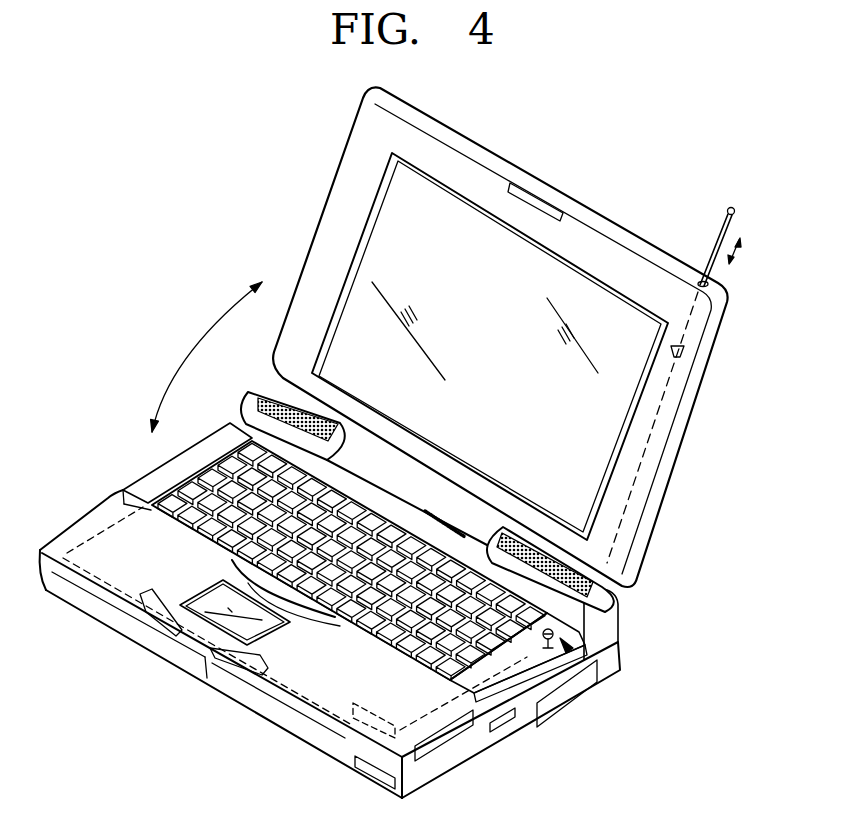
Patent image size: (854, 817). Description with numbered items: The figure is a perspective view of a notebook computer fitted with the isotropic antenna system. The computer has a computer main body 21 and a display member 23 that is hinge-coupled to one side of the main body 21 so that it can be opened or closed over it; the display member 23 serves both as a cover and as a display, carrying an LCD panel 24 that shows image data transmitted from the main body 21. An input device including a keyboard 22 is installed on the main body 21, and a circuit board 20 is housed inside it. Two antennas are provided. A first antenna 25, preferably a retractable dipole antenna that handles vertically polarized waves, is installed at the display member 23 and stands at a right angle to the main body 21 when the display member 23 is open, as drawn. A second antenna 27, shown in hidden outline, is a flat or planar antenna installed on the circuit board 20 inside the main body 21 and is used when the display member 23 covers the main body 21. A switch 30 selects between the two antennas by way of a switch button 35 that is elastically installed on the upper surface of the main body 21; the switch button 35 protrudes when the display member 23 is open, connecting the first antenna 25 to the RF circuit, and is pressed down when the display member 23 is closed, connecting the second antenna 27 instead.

The circuit board 20 is at (78, 545).
The computer main body 21 is at (95, 505).
The keyboard 22 is at (220, 480).
The display member 23 is at (322, 252).
The LCD panel 24 is at (410, 213).
The first antenna 25 is at (735, 208).
The second antenna 27 is at (373, 723).
The switch 30 is at (610, 673).
The switch button 35 is at (545, 645).